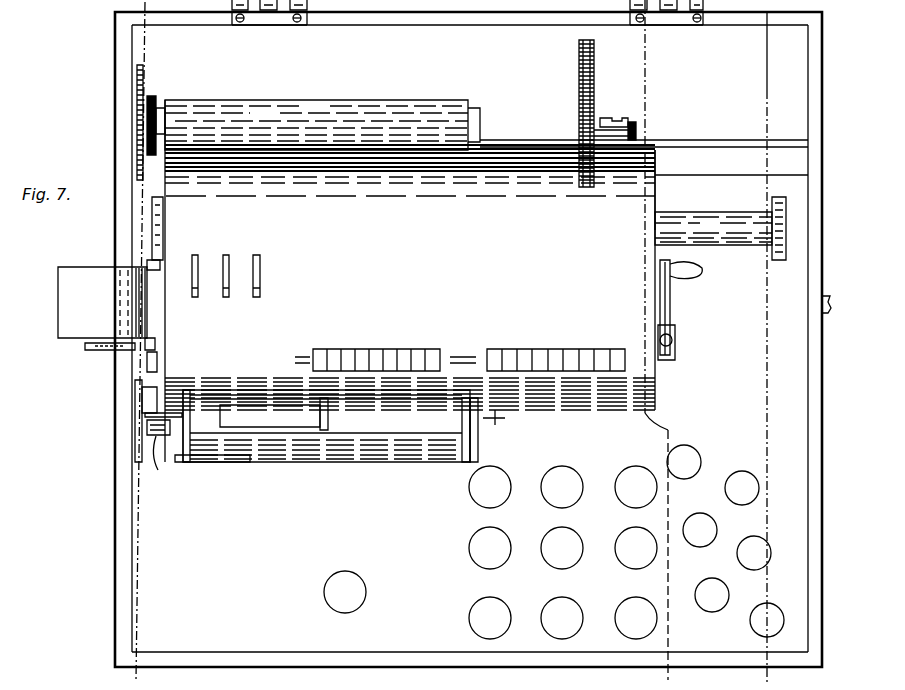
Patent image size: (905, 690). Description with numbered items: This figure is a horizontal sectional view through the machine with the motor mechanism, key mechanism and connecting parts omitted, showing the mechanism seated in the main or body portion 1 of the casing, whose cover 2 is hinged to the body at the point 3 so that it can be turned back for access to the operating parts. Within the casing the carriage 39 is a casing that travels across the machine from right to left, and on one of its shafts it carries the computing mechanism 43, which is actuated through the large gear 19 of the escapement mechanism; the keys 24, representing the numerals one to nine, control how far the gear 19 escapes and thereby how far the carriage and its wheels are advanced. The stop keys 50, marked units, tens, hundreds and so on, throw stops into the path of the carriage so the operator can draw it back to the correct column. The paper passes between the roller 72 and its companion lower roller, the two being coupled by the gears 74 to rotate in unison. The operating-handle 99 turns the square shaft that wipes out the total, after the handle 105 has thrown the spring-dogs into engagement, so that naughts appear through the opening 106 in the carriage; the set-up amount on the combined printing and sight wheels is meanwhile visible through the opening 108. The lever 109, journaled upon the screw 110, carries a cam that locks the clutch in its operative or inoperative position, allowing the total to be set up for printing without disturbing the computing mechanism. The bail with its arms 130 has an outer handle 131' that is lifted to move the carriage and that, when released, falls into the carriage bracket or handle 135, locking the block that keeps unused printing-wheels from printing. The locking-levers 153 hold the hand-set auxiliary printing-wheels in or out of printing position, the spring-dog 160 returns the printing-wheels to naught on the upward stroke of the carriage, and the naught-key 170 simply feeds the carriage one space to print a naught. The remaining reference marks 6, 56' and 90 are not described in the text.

The main or body portion of the casing 1 is at (491, 15).
The cover 2 is at (757, 680).
The hinge point 3 is at (292, 12).
The section line 6- 6 is at (138, 680).
The large gear 19 is at (577, 72).
The keys 24 is at (548, 535).
The carriage 39 is at (410, 281).
The computing mechanism 43 is at (720, 225).
The stop keys 50 is at (712, 584).
The spring wire 56' is at (162, 464).
The roller 72 is at (318, 125).
The gears 74 is at (150, 100).
The bracket 90 is at (148, 440).
The operating-handle 99 is at (670, 310).
The handle 105 is at (492, 424).
The opening 106 is at (582, 340).
The opening 108 is at (396, 345).
The lever 109 is at (637, 130).
The screw 110 is at (606, 121).
The bail arms 130 is at (185, 400).
The handle of the bail 131' is at (326, 461).
The carriage bracket or handle 135 is at (302, 463).
The locking-levers 153 is at (256, 262).
The spring-dog 160 is at (148, 365).
The naught-key 170 is at (355, 580).